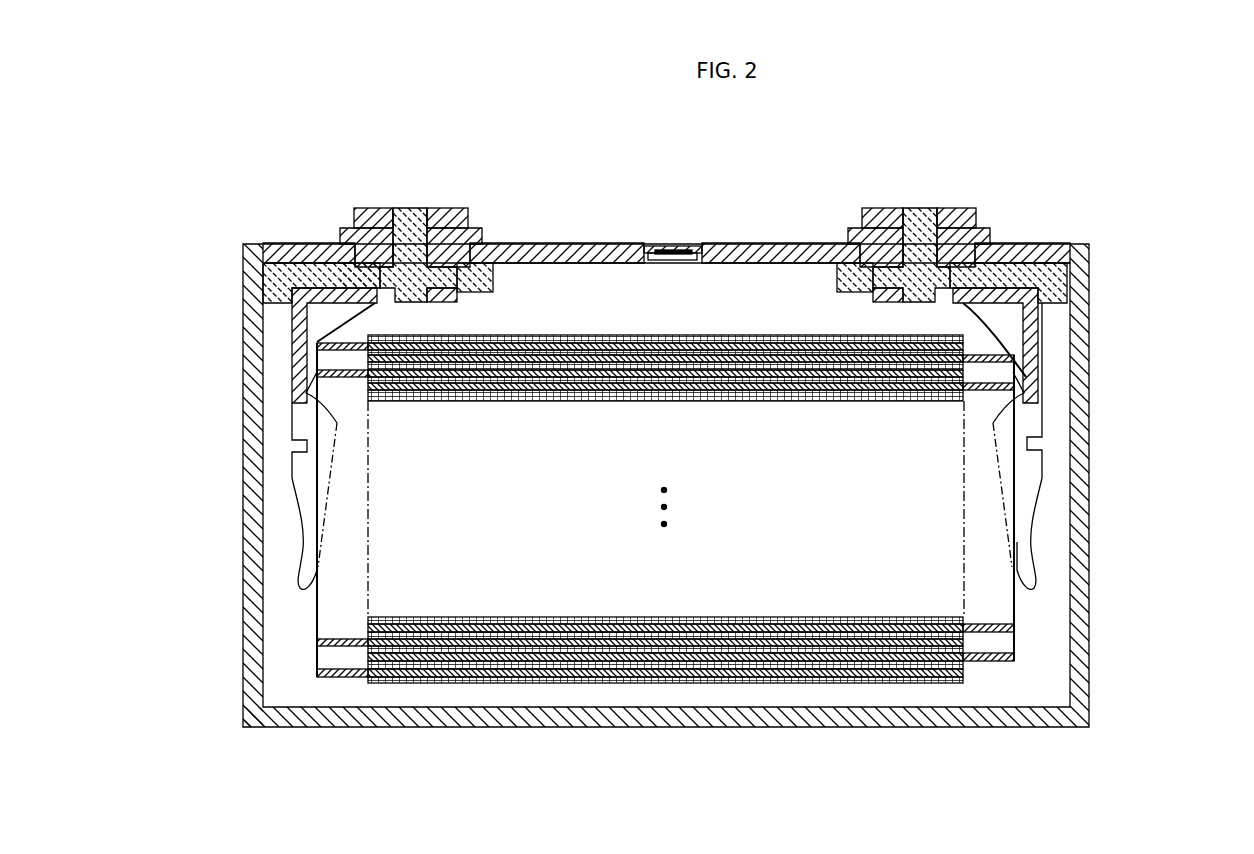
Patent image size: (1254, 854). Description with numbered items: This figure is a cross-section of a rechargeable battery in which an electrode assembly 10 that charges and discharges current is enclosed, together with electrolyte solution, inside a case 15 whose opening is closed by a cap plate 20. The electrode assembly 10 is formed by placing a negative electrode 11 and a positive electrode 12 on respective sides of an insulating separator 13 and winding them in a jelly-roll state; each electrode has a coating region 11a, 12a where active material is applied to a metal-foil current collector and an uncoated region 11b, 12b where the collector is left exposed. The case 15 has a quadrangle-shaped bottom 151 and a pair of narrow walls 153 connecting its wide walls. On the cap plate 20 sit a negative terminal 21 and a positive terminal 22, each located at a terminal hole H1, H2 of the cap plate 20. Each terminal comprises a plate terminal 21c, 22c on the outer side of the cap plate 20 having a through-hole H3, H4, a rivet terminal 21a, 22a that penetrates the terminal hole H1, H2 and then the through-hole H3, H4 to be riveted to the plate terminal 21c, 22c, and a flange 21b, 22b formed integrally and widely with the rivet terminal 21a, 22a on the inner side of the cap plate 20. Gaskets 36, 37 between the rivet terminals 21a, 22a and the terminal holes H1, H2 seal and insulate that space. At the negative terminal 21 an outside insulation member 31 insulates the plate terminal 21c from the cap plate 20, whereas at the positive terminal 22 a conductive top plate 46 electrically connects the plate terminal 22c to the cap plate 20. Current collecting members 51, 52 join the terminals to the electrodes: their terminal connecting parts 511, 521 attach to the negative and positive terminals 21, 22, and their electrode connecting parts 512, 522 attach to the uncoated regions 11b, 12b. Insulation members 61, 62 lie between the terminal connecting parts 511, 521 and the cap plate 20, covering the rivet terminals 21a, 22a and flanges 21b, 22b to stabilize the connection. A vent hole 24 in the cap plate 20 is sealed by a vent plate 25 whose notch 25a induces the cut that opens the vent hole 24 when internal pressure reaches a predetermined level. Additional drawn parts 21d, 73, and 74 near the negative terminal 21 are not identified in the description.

The electrode assembly 10 is at (665, 579).
The negative electrode 11 is at (640, 583).
The coating region 11a is at (420, 677).
The uncoated region 11b is at (330, 677).
The positive electrode 12 is at (691, 585).
The coating region 12a is at (900, 657).
The uncoated region 12b is at (993, 658).
The separator 13 is at (650, 678).
The case 15 is at (739, 504).
The bottom 151 is at (1037, 717).
The narrow wall 153 is at (1133, 475).
The cap plate 20 is at (597, 243).
The negative terminal 21 is at (435, 315).
The rivet terminal 21a is at (408, 278).
The flange 21b is at (457, 267).
The plate terminal 21c is at (373, 217).
The first terminal lower portion 21d is at (378, 303).
The positive terminal 22 is at (860, 289).
The rivet terminal 22a is at (920, 276).
The flange 22b is at (873, 278).
The plate terminal 22c is at (957, 212).
The vent hole 24 is at (673, 260).
The vent plate 25 is at (697, 246).
The notch 25a is at (665, 250).
The outside insulation member 31 is at (477, 228).
The gasket 36 is at (357, 237).
The gasket 37 is at (980, 233).
The conductive top plate 46 is at (858, 228).
The current collecting member 51 is at (247, 438).
The terminal connecting part 511 is at (337, 305).
The electrode connecting part 512 is at (297, 468).
The current collecting member 52 is at (1082, 438).
The terminal connecting part 521 is at (1023, 348).
The electrode connecting part 522 is at (1037, 497).
The insulation member 61 is at (277, 282).
The insulation member 62 is at (1052, 275).
The lower gasket 73 is at (413, 303).
The seal member 74 is at (373, 277).
The terminal hole H1 is at (422, 237).
The terminal hole H2 is at (902, 225).
The through-hole H3 is at (403, 213).
The through-hole H4 is at (925, 218).